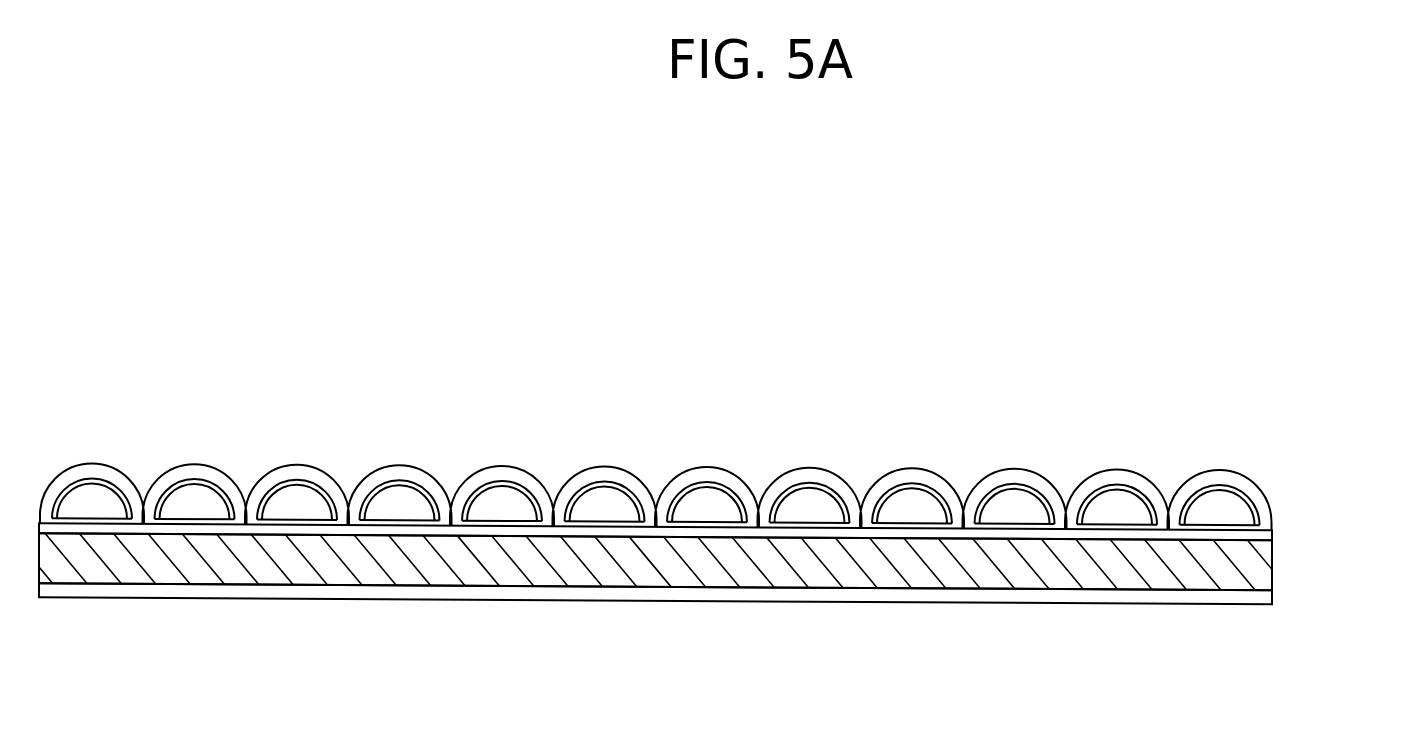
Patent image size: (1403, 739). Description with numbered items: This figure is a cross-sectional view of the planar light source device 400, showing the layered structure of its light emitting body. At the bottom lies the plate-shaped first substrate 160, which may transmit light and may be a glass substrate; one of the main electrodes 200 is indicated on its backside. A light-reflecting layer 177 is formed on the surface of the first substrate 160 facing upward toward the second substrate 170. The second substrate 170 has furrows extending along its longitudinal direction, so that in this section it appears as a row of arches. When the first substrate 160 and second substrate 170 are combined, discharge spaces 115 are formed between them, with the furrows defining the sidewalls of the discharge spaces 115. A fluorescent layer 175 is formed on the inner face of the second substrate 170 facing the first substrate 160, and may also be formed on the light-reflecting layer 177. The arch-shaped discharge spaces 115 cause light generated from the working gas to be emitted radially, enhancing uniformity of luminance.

The planar light source device 400 is at (705, 491).
The second substrate 170 is at (1221, 472).
The discharge spaces 115 is at (1235, 512).
The fluorescent layer 175 is at (90, 522).
The light-reflecting layer 177 is at (1260, 538).
The first substrate 160 is at (1255, 575).
The main electrodes 200 is at (1144, 602).